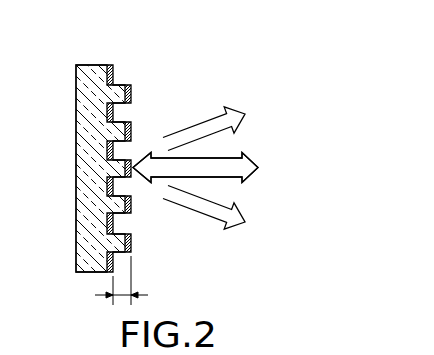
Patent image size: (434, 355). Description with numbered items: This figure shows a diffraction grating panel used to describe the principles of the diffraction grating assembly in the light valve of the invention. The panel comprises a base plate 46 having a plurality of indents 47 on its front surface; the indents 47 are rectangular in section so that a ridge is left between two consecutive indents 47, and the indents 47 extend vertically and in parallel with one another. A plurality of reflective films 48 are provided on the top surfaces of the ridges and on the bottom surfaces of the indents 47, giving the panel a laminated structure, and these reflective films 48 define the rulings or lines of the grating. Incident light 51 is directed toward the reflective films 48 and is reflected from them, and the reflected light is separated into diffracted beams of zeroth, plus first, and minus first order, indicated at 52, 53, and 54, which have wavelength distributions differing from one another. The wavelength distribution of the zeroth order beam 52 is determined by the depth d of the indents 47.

The base plate 46 is at (90, 72).
The indents 47 is at (128, 112).
The reflective films 48 is at (115, 72).
The incident light 51 is at (158, 156).
The zeroth order beam 52 is at (256, 165).
The plus first order beam 53 is at (207, 119).
The minus first order beam 54 is at (210, 212).
The projection depth d is at (125, 280).